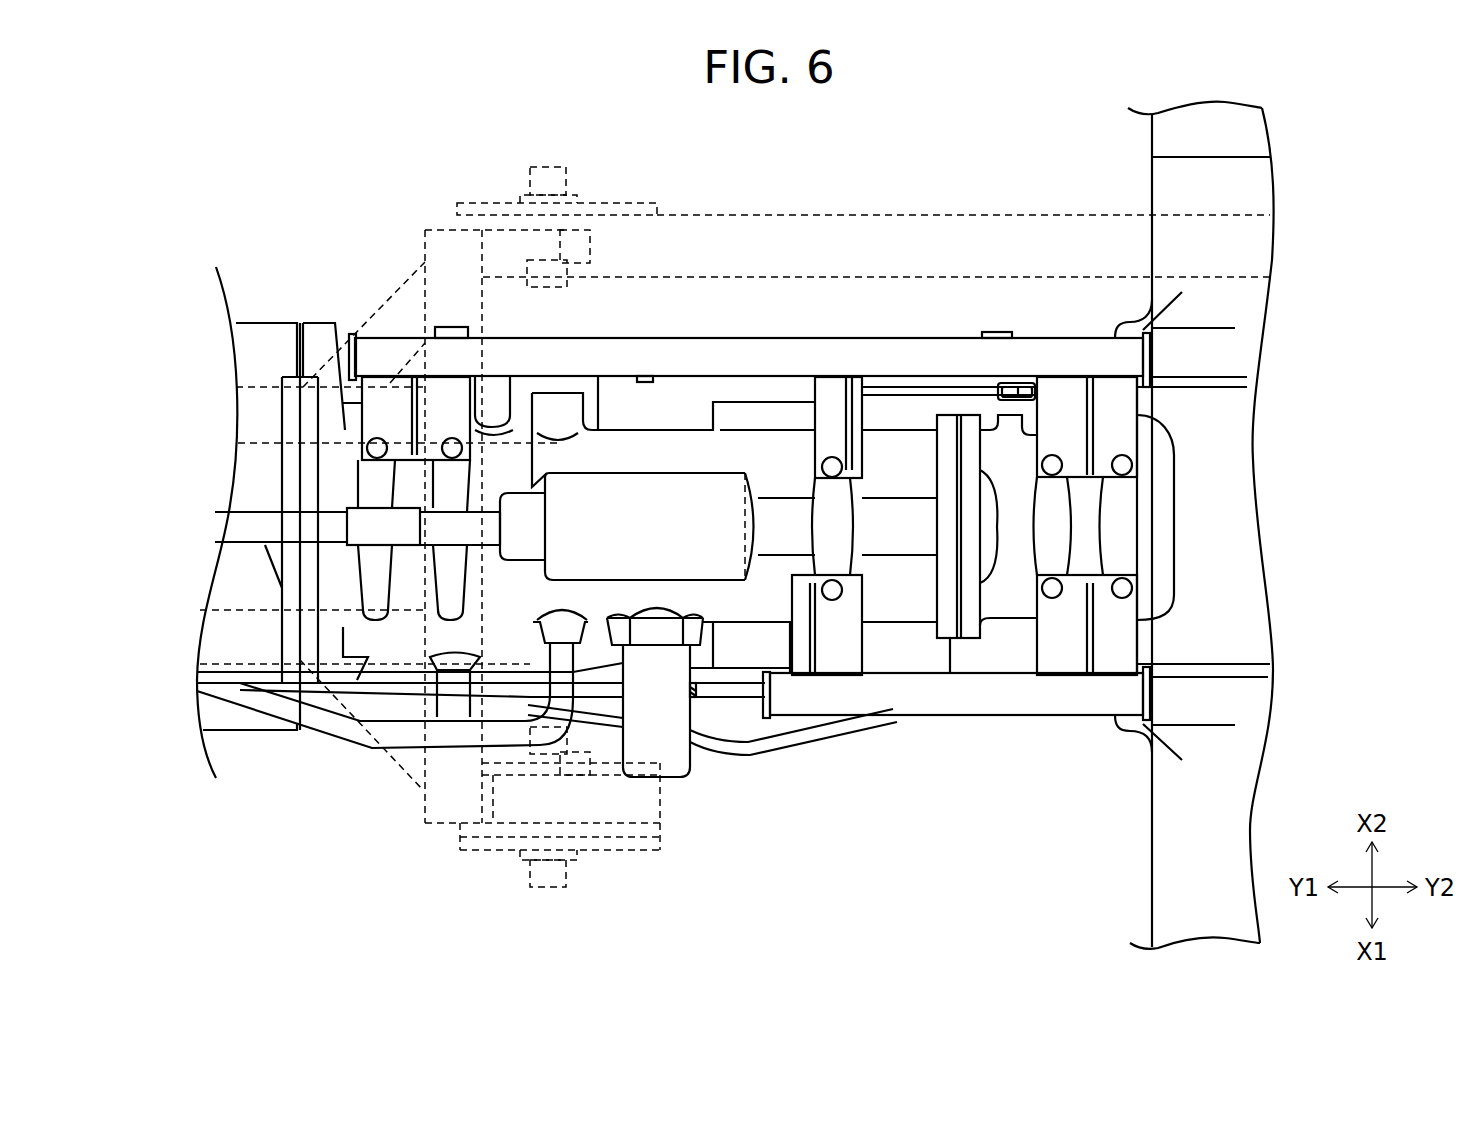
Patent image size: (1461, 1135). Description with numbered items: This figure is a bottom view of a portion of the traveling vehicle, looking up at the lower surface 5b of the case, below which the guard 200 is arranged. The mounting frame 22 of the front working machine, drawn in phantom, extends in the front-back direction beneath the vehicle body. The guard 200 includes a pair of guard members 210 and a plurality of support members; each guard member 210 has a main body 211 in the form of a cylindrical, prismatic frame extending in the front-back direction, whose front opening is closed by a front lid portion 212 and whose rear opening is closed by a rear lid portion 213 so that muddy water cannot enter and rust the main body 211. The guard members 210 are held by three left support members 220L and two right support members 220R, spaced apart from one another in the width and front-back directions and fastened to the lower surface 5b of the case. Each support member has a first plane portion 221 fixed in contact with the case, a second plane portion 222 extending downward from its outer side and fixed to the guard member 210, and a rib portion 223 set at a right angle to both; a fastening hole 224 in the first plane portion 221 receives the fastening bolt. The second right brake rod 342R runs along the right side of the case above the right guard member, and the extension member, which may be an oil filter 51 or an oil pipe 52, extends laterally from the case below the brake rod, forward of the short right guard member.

The mounting frame 22 is at (425, 230).
The guard 200 is at (1090, 872).
The guard member 210 is at (1005, 852).
The main body 211 is at (650, 360).
The front lid portion 212 is at (347, 358).
The rear lid portion 213 is at (1153, 350).
The left support member 220L is at (372, 416).
The right support member 220R is at (825, 660).
The first plane portion 221 is at (1130, 424).
The second plane portion 222 is at (1122, 406).
The rib portion 223 is at (410, 417).
The fastening hole 224 is at (450, 459).
The lower surface of the case 5b is at (683, 457).
The oil filter 51 is at (648, 744).
The oil pipe 52 is at (513, 728).
The second right brake rod 342R is at (710, 692).